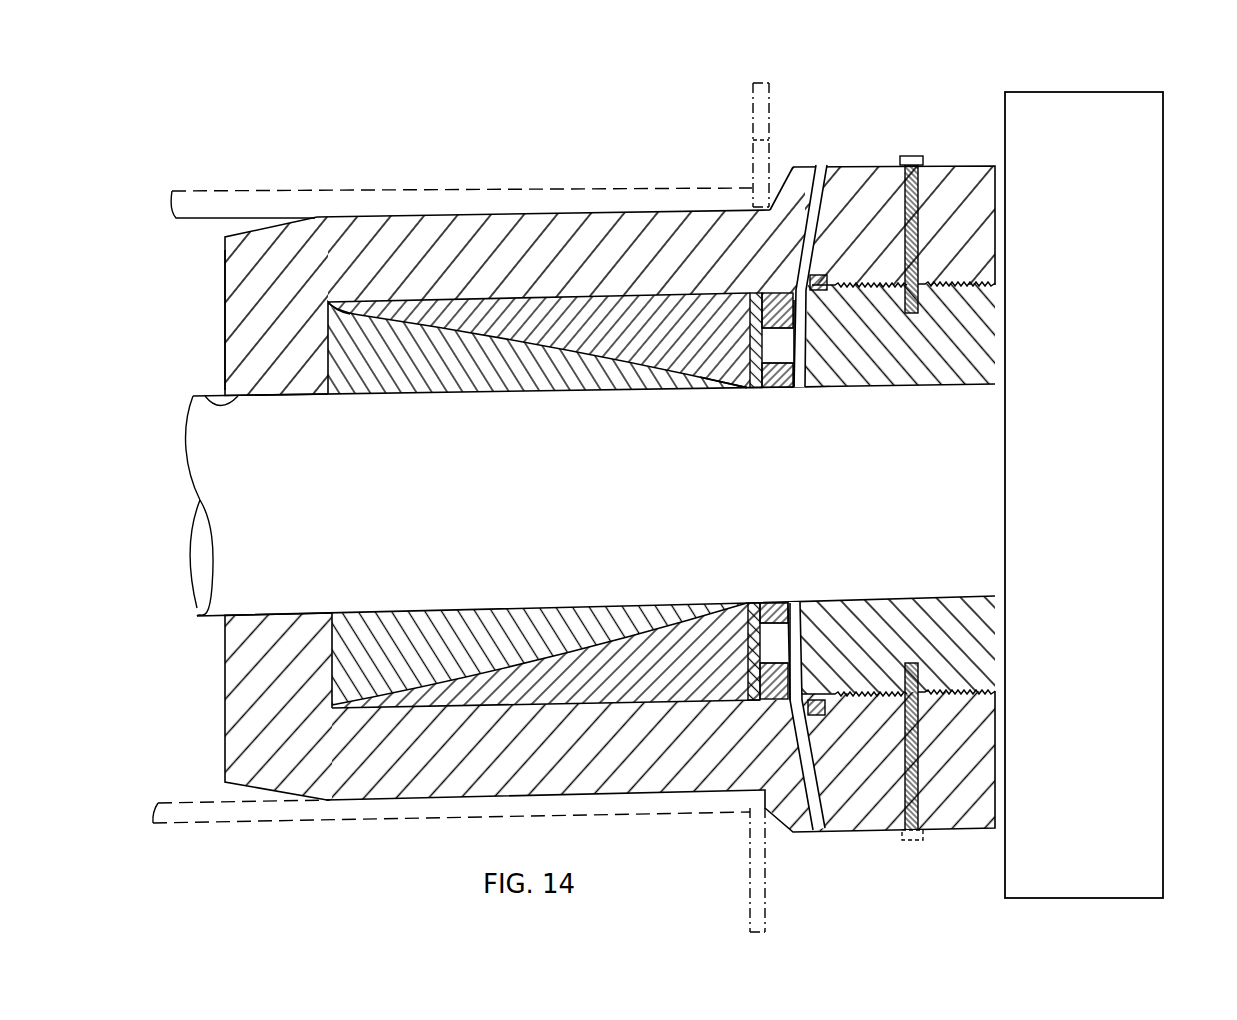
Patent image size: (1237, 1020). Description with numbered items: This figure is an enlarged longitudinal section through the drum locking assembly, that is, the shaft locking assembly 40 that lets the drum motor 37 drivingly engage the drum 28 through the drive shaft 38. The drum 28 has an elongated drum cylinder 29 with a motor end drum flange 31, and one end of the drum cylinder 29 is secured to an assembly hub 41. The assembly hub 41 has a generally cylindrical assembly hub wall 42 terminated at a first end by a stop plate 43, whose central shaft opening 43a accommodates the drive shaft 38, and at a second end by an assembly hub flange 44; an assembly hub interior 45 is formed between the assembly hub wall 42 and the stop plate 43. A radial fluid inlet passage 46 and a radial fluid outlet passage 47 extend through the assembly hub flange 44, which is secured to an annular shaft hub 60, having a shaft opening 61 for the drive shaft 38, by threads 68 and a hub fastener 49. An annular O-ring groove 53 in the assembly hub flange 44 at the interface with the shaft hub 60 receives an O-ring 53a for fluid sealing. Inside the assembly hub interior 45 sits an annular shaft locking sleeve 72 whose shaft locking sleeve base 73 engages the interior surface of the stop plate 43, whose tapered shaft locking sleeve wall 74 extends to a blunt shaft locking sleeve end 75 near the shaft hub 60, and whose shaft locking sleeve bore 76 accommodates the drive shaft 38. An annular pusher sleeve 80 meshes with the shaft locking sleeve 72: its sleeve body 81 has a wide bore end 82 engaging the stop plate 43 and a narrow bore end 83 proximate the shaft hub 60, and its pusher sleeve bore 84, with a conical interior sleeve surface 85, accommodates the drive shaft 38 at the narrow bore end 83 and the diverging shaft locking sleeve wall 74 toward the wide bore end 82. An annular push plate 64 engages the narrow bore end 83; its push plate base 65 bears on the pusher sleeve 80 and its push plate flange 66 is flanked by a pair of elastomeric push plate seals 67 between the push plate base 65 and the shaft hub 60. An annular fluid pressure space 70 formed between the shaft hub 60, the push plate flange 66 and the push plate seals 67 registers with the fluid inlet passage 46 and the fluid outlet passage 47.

The drum 28 is at (782, 103).
The drum cylinder 29 is at (398, 203).
The motor end drum flange 31 is at (750, 143).
The drum motor 37 is at (1150, 491).
The drive shaft 38 is at (588, 503).
The shaft locking assembly 40 is at (986, 85).
The assembly hub 41 is at (213, 262).
The assembly hub wall 42 is at (597, 217).
The stop plate 43 is at (240, 310).
The central shaft opening 43a is at (215, 395).
The assembly hub flange 44 is at (945, 165).
The assembly hub interior 45 is at (348, 303).
The radial fluid inlet passage 46 is at (823, 166).
The radial fluid outlet passage 47 is at (820, 814).
The hub fastener 49 is at (912, 155).
The O-ring groove 53 is at (825, 276).
The O-ring 53a is at (882, 404).
The shaft hub 60 is at (985, 333).
The shaft opening 61 is at (995, 392).
The push plate 64 is at (760, 408).
The push plate base 65 is at (753, 357).
The push plate flange 66 is at (782, 378).
The push plate seals 67 is at (768, 300).
The threads 68 is at (988, 276).
The fluid pressure space 70 is at (794, 385).
The shaft locking sleeve 72 is at (318, 354).
The shaft locking sleeve base 73 is at (322, 614).
The shaft locking sleeve wall 74 is at (455, 322).
The shaft locking sleeve end 75 is at (752, 600).
The shaft locking sleeve bore 76 is at (445, 410).
The pusher sleeve 80 is at (658, 283).
The sleeve body 81 is at (510, 300).
The wide bore end 82 is at (332, 707).
The narrow bore end 83 is at (755, 600).
The pusher sleeve bore 84 is at (580, 622).
The interior sleeve surface 85 is at (660, 600).